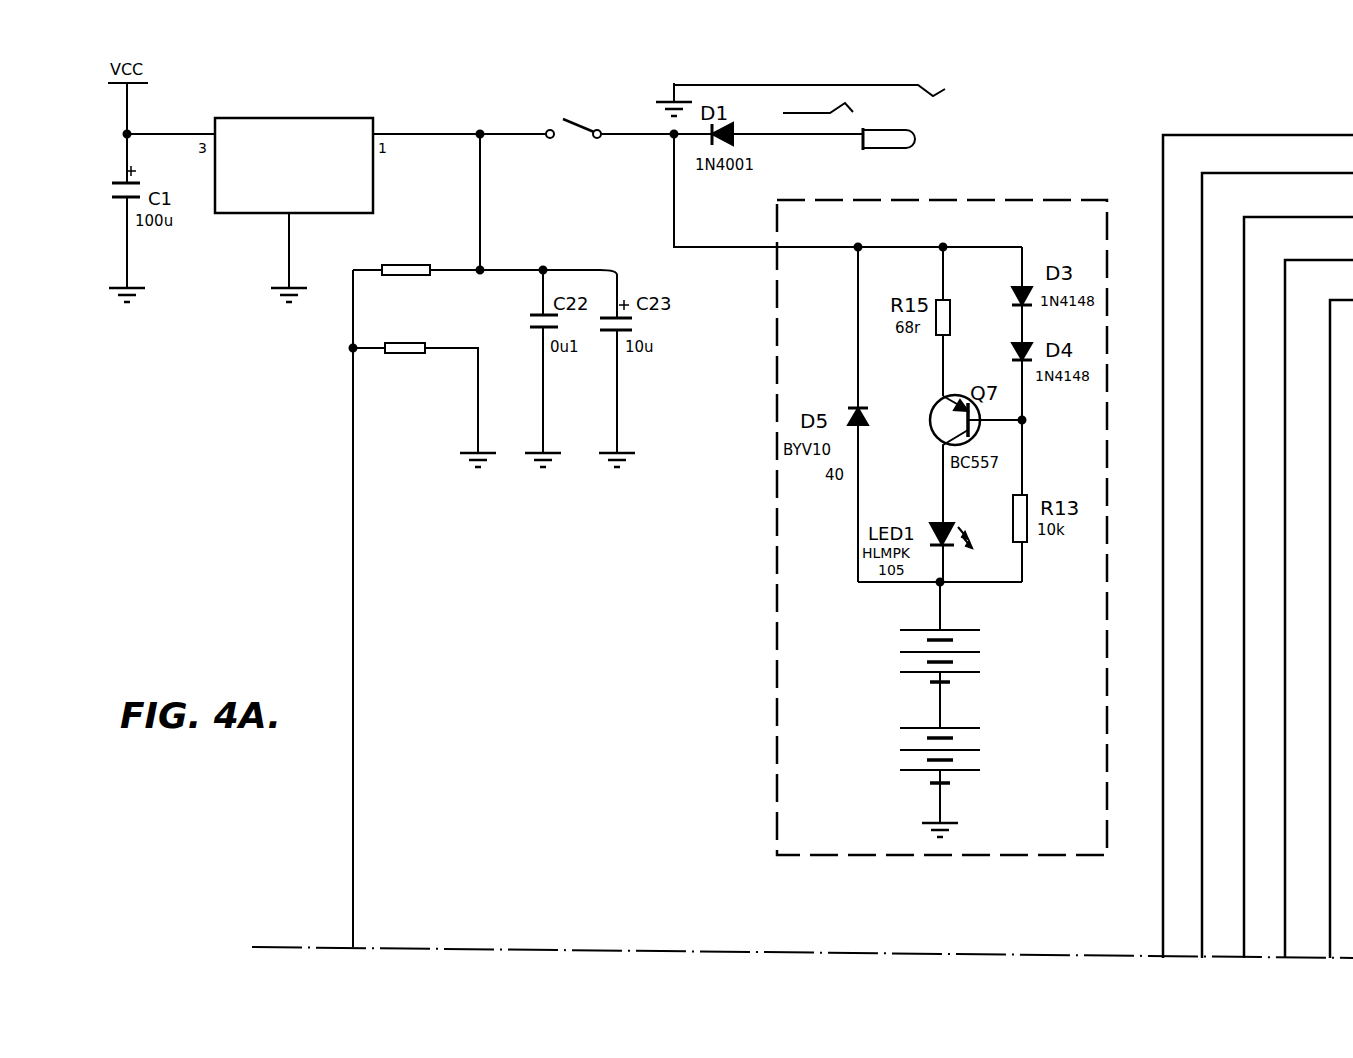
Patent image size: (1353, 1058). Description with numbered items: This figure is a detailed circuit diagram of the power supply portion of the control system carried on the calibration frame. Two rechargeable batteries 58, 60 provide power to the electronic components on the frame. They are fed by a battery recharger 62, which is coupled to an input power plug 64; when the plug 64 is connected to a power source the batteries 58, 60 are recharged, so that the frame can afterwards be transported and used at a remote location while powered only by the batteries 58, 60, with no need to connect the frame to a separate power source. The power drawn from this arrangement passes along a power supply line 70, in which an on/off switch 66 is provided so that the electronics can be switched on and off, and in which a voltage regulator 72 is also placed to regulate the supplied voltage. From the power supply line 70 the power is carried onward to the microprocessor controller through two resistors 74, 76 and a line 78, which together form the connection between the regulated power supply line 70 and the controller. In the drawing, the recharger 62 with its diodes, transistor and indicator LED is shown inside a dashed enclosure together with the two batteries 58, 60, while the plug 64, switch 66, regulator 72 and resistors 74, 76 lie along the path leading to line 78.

The rechargeable battery 58 is at (900, 640).
The rechargeable battery 60 is at (915, 735).
The battery recharger 62 is at (1005, 435).
The input power plug 64 is at (940, 137).
The on/off switch 66 is at (607, 152).
The power supply line 70 is at (418, 133).
The voltage regulator 72 is at (240, 198).
The resistor 74 is at (432, 280).
The resistor 76 is at (373, 368).
The line 78 is at (352, 540).